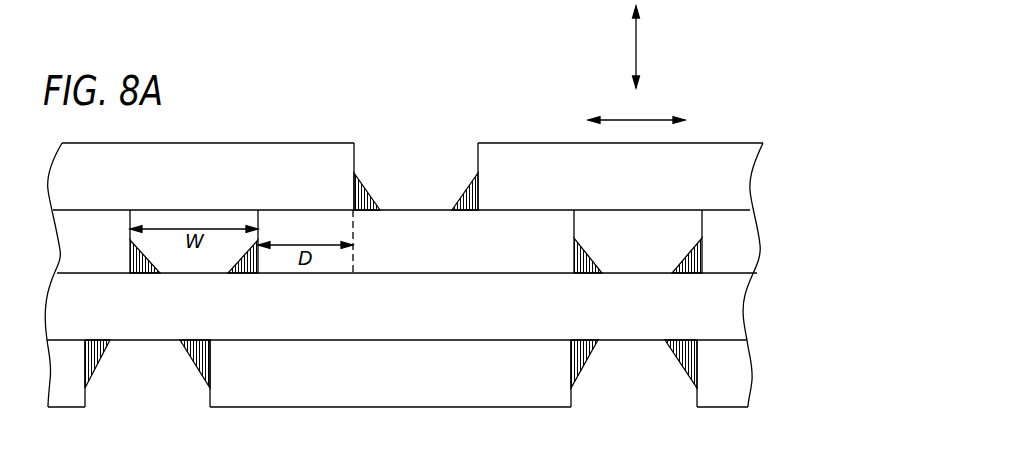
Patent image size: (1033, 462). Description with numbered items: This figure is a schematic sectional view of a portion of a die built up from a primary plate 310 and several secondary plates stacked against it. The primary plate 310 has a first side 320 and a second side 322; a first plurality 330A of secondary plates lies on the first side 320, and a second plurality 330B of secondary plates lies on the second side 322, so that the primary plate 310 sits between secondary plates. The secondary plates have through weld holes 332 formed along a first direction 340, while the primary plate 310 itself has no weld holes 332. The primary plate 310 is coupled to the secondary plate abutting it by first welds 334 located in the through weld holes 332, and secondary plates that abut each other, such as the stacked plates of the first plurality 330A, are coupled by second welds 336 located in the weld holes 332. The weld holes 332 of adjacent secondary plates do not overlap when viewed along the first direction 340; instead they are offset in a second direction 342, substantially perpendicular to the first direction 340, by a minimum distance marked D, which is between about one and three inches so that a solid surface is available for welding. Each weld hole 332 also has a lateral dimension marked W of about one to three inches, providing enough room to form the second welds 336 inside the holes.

The primary plate 310 is at (472, 318).
The first plurality of secondary plates 330A is at (710, 189).
The second plurality of secondary plates 330B is at (475, 384).
The first side 320 is at (147, 355).
The second side 322 is at (108, 281).
The through weld holes 332 is at (417, 170).
The first welds 334 is at (137, 278).
The second welds 336 is at (374, 189).
The first direction 340 is at (636, 50).
The second direction 342 is at (638, 120).